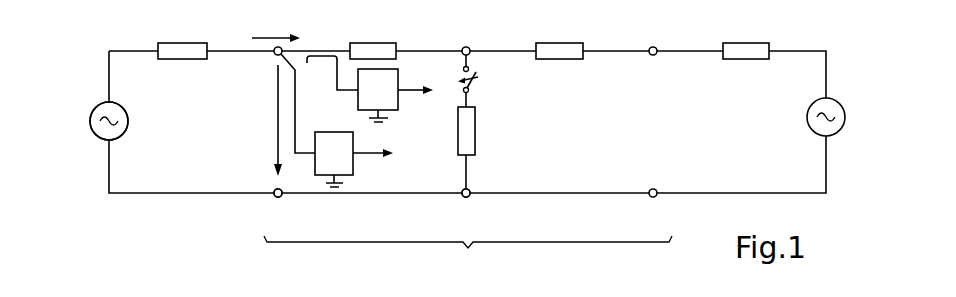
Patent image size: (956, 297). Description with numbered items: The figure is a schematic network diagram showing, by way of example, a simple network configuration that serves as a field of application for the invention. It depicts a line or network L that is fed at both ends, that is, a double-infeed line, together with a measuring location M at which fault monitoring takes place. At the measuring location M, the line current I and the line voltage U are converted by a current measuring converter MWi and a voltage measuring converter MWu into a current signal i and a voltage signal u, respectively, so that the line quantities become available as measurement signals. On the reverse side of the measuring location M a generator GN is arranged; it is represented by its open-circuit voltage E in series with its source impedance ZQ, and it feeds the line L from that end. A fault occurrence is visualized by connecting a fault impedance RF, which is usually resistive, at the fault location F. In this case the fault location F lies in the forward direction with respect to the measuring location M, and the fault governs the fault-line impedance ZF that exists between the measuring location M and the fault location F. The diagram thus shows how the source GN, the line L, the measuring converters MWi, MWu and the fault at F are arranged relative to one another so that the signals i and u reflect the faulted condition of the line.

The generator GN is at (90, 117).
The open-circuit voltage E is at (123, 121).
The source impedance ZQ is at (182, 36).
The fault-line impedance ZF is at (373, 37).
The line current I is at (276, 28).
The line voltage U is at (270, 120).
The measuring location M is at (278, 199).
The fault location F is at (466, 199).
The voltage measuring converter MWu is at (330, 140).
The current measuring converter MWi is at (388, 81).
The voltage signal u is at (380, 152).
The current signal i is at (419, 89).
The fault impedance RF is at (482, 122).
The line L is at (477, 276).